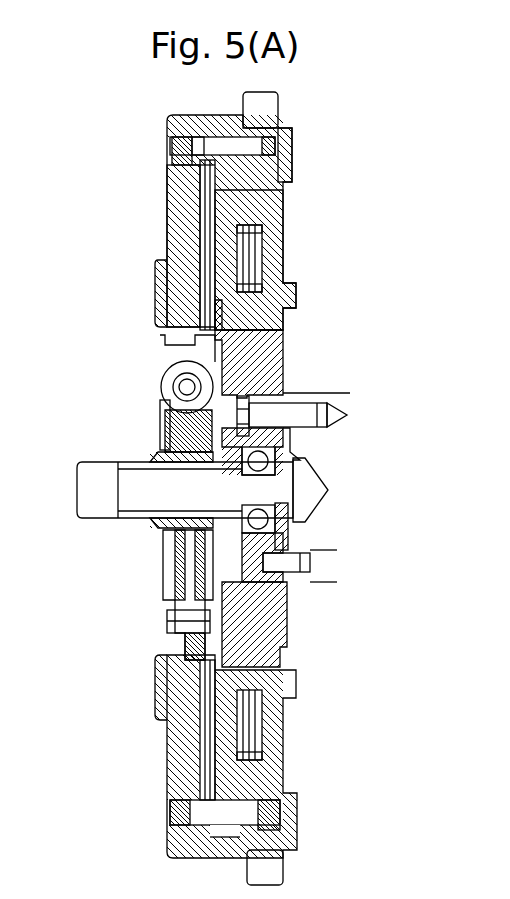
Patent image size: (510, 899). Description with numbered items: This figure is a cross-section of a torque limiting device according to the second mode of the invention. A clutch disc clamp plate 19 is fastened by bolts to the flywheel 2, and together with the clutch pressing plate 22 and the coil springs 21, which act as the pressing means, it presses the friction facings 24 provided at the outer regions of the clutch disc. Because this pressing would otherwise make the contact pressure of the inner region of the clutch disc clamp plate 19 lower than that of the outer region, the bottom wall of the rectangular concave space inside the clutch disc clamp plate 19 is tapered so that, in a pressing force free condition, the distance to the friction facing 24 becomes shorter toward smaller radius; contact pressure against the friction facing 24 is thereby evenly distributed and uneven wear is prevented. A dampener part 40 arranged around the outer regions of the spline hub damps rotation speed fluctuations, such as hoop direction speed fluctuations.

The flywheel 2 is at (292, 152).
The clutch disc clamp plate 19 is at (167, 185).
The coil springs 21 is at (283, 258).
The clutch pressing plate 22 is at (285, 207).
The friction facing 24 is at (168, 241).
The dampener part 40 is at (122, 385).